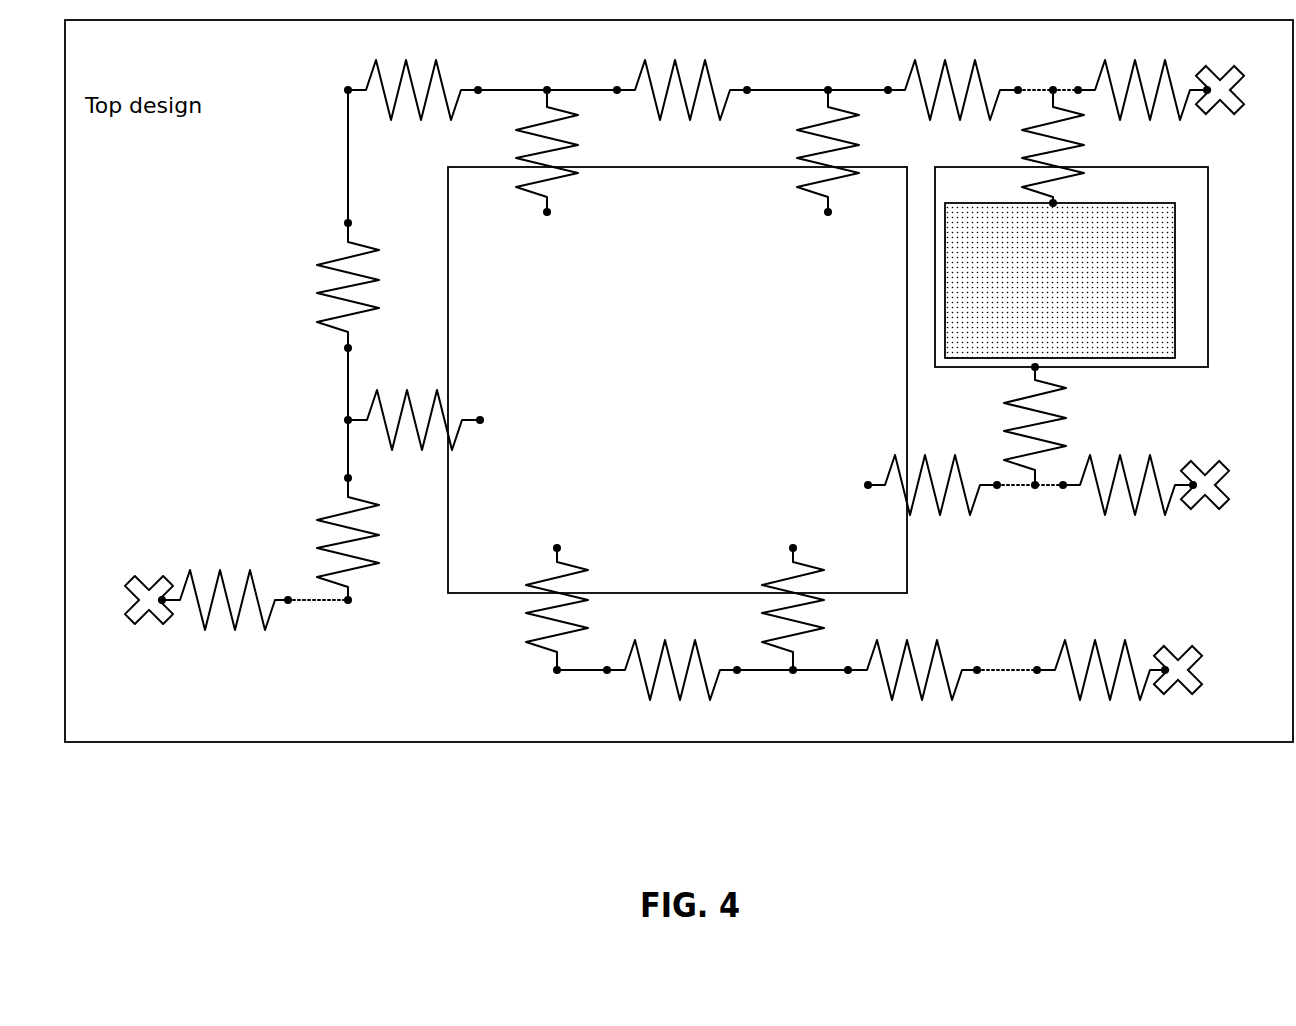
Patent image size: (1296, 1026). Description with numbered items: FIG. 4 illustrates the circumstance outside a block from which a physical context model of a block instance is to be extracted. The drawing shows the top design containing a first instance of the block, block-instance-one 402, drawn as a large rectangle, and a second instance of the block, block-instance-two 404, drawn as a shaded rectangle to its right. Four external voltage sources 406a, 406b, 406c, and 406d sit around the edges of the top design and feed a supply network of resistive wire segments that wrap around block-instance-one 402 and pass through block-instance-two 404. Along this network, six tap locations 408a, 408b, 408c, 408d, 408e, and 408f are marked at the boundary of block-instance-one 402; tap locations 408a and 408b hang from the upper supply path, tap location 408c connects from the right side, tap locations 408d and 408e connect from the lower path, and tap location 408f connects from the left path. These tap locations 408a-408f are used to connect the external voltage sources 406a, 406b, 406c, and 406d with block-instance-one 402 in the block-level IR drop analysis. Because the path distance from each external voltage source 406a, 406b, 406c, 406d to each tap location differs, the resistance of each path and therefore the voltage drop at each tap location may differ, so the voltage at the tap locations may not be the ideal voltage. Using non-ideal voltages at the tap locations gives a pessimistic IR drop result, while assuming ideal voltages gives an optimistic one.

The block-instance-1 402 is at (698, 392).
The block-instance-2 404 is at (1043, 345).
The external voltage source 406a is at (191, 576).
The external voltage source 406b is at (1231, 113).
The external voltage source 406c is at (1210, 462).
The external voltage source 406d is at (1191, 649).
The tap location 408a is at (564, 174).
The tap location 408b is at (813, 174).
The tap location 408c is at (906, 470).
The tap location 408d is at (776, 584).
The tap location 408e is at (573, 584).
The tap location 408f is at (443, 405).